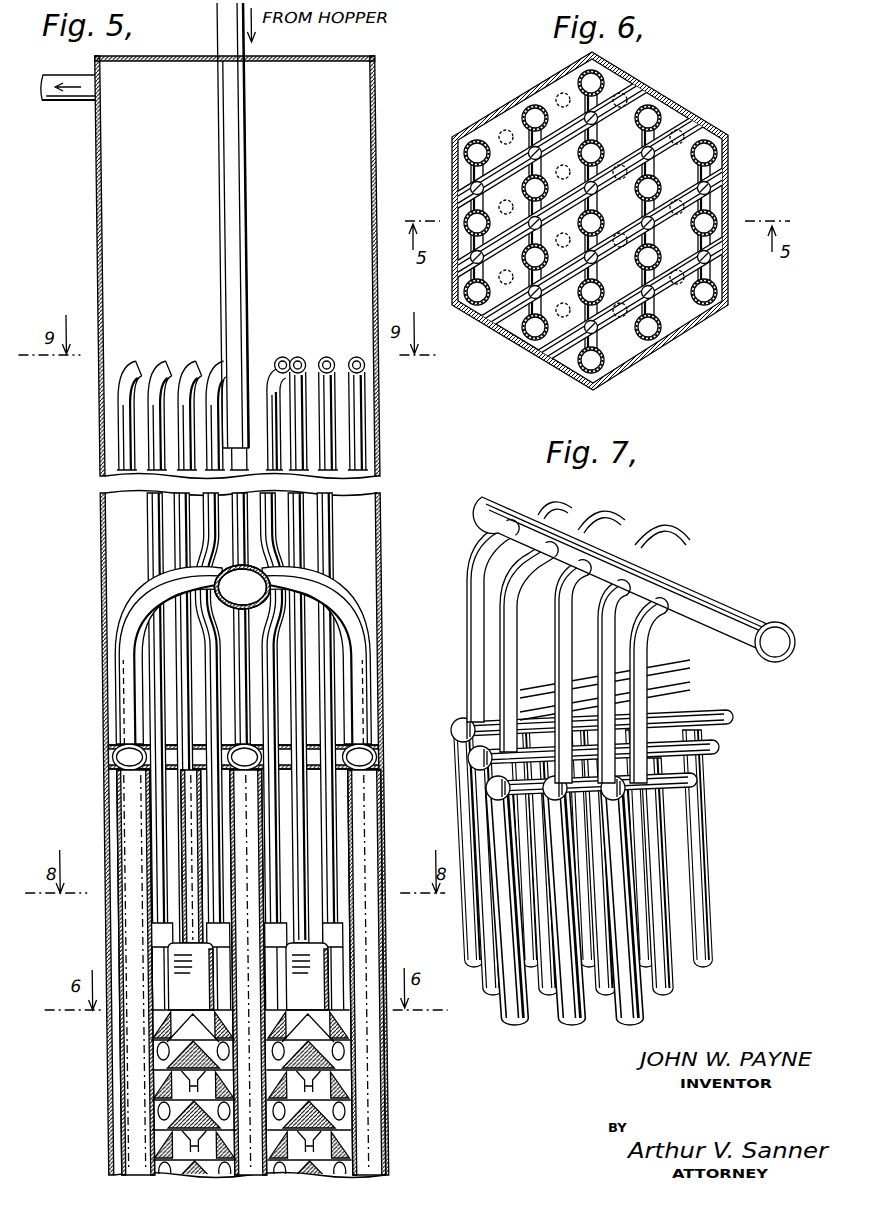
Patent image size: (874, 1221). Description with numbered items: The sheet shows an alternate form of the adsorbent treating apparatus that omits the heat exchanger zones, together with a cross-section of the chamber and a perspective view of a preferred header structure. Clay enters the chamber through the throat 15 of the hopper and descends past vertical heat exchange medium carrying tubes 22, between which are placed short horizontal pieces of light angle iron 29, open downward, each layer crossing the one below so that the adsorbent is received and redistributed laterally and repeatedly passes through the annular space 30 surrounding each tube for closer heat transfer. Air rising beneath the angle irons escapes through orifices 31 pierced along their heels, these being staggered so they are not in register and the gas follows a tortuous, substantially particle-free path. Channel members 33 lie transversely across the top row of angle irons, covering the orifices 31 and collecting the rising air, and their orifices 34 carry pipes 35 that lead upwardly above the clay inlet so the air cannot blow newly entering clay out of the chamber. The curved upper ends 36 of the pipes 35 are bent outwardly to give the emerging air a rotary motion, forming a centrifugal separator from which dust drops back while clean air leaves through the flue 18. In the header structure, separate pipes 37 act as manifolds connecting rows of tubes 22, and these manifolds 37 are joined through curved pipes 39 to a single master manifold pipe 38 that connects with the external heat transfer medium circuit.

In FIG. 5, the throat 15 is at (217, 36).
In FIG. 5, the flue 18 is at (56, 105).
In FIG. 5, the heat exchange medium carrying tubes 22 is at (171, 814).
In FIG. 6, the heat exchange medium carrying tubes 22 is at (622, 75).
In FIG. 7, the heat exchange medium carrying tubes 22 is at (676, 857).
In FIG. 5, the angle irons 29 is at (345, 1026).
In FIG. 6, the angle irons 29 is at (688, 130).
In FIG. 5, the annular space 30 is at (372, 1116).
In FIG. 6, the annular space 30 is at (478, 130).
In FIG. 5, the orifices 31 is at (318, 1078).
In FIG. 6, the orifices 31 is at (610, 115).
In FIG. 5, the channel members 33 is at (160, 975).
In FIG. 5, the orifices 34 is at (331, 933).
In FIG. 5, the pipes 35 is at (326, 868).
In FIG. 5, the curved upper ends 36 is at (203, 400).
In FIG. 5, the pipes 37 is at (103, 756).
In FIG. 7, the pipes 37 is at (478, 752).
In FIG. 5, the master manifold pipe 38 is at (262, 576).
In FIG. 7, the master manifold pipe 38 is at (755, 616).
In FIG. 5, the curved pipes 39 is at (107, 707).
In FIG. 7, the curved pipes 39 is at (480, 545).